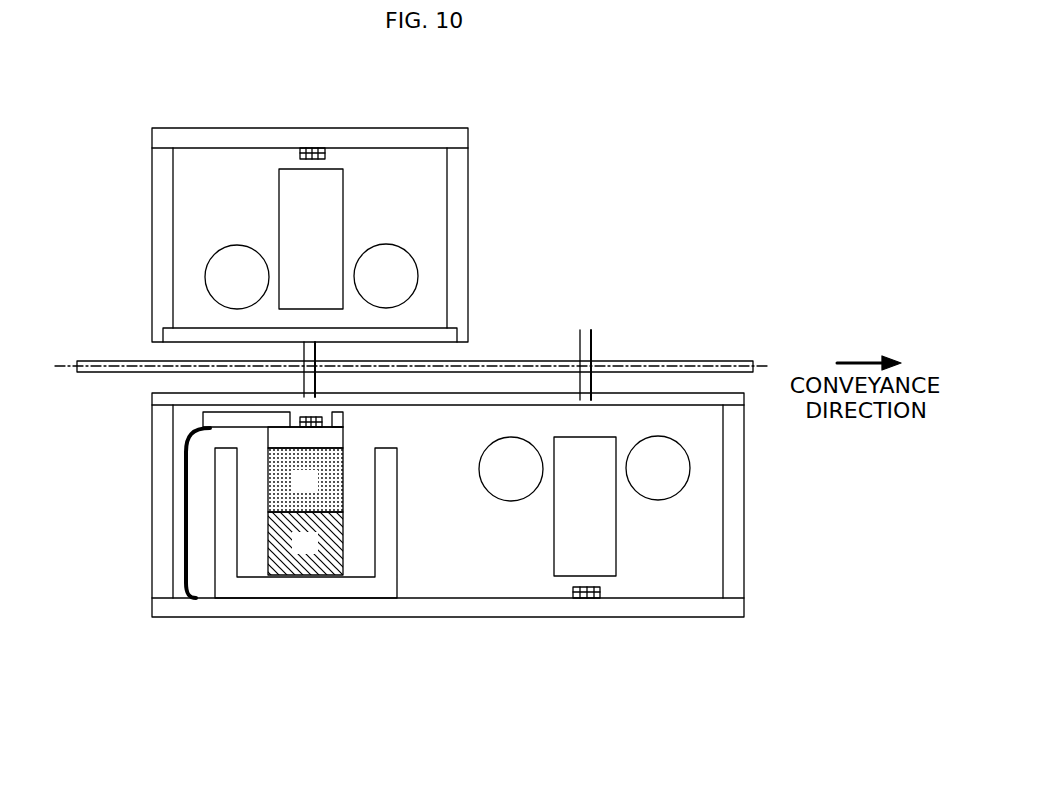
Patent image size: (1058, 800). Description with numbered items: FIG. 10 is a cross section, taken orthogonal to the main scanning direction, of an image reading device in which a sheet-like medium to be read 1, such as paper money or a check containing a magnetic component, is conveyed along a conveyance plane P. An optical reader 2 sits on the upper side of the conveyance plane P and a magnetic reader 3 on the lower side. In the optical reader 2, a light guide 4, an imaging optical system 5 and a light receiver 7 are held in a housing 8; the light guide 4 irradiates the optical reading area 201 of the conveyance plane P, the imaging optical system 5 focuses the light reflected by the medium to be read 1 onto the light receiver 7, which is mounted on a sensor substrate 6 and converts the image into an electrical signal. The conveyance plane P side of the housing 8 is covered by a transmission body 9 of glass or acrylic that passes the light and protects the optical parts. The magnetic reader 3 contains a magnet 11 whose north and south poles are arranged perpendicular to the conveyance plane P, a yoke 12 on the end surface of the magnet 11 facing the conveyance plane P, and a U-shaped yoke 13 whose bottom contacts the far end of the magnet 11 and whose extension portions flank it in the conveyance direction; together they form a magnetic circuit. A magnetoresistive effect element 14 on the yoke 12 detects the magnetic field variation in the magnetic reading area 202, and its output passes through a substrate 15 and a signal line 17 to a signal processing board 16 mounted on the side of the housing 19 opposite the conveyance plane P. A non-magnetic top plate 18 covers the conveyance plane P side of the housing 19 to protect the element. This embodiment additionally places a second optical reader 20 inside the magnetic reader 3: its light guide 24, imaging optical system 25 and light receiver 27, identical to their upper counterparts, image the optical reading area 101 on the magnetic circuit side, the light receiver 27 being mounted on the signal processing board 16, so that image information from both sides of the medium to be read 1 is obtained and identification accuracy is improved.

The medium to be read 1 is at (753, 364).
The optical reader 2 is at (325, 218).
The magnetic reader 3 is at (471, 559).
The light guide 4 is at (203, 270).
The imaging optical system 5 is at (347, 233).
The sensor substrate 6 is at (185, 137).
The light receiver 7 is at (312, 148).
The housing 8 is at (162, 257).
The transmission body 9 is at (468, 337).
The magnet 11 is at (327, 528).
The yoke 12 is at (313, 437).
The yoke 13 is at (207, 475).
The magnetoresistive effect element 14 is at (325, 424).
The substrate 15 is at (203, 418).
The signal processing board 16 is at (268, 606).
The signal line 17 is at (188, 533).
The non-magnetic top plate 18 is at (747, 397).
The housing 19 is at (747, 553).
The optical reader 20 is at (614, 584).
The light guide 24 is at (512, 480).
The imaging optical system 25 is at (595, 503).
The light receiver 27 is at (563, 637).
The optical reading area 101 is at (590, 385).
The optical reading area 201 is at (285, 355).
The magnetic reading area 202 is at (305, 384).
The conveyance plane P is at (695, 358).